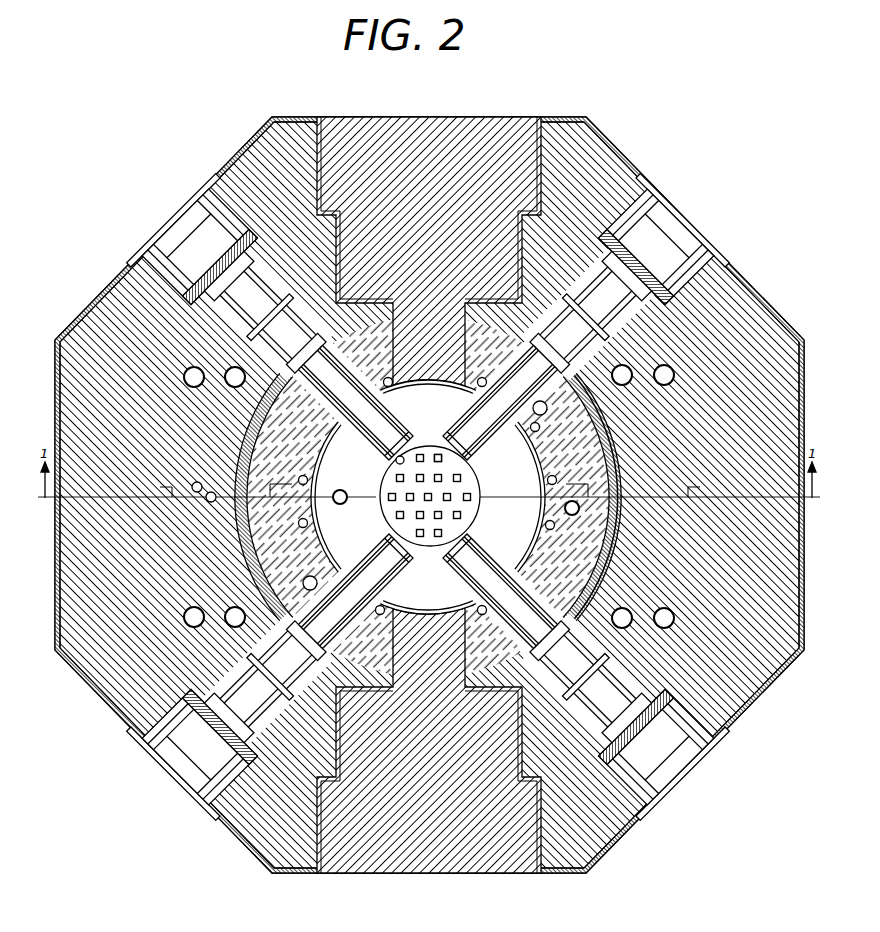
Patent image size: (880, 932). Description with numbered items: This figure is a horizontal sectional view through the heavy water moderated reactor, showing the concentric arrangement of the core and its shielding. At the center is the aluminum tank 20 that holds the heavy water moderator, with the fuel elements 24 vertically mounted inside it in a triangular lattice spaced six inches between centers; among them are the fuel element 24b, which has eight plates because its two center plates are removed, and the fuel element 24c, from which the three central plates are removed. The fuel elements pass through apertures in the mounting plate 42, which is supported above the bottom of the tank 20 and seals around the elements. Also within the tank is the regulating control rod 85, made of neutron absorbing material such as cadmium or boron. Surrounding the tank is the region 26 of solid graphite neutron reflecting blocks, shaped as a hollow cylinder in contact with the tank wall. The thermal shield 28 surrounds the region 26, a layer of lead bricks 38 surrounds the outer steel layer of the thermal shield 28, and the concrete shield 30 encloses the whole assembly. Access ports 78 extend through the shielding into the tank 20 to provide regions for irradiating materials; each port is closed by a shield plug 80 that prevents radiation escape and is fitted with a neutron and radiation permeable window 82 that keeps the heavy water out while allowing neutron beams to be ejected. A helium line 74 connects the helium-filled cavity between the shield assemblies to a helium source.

The tank 20 is at (528, 553).
The fuel elements 24 is at (388, 499).
The fuel element 24b is at (444, 460).
The fuel element 24c is at (448, 533).
The region 26 is at (316, 429).
The thermal shield 28 is at (615, 447).
The concrete shield 30 is at (136, 511).
The lead bricks 38 is at (614, 546).
The mounting plate 42 is at (396, 518).
The helium line 74 is at (197, 482).
The access ports 78 is at (460, 411).
The shield plugs 80 is at (438, 247).
The windows 82 is at (437, 445).
The regulating control rod 85 is at (397, 462).